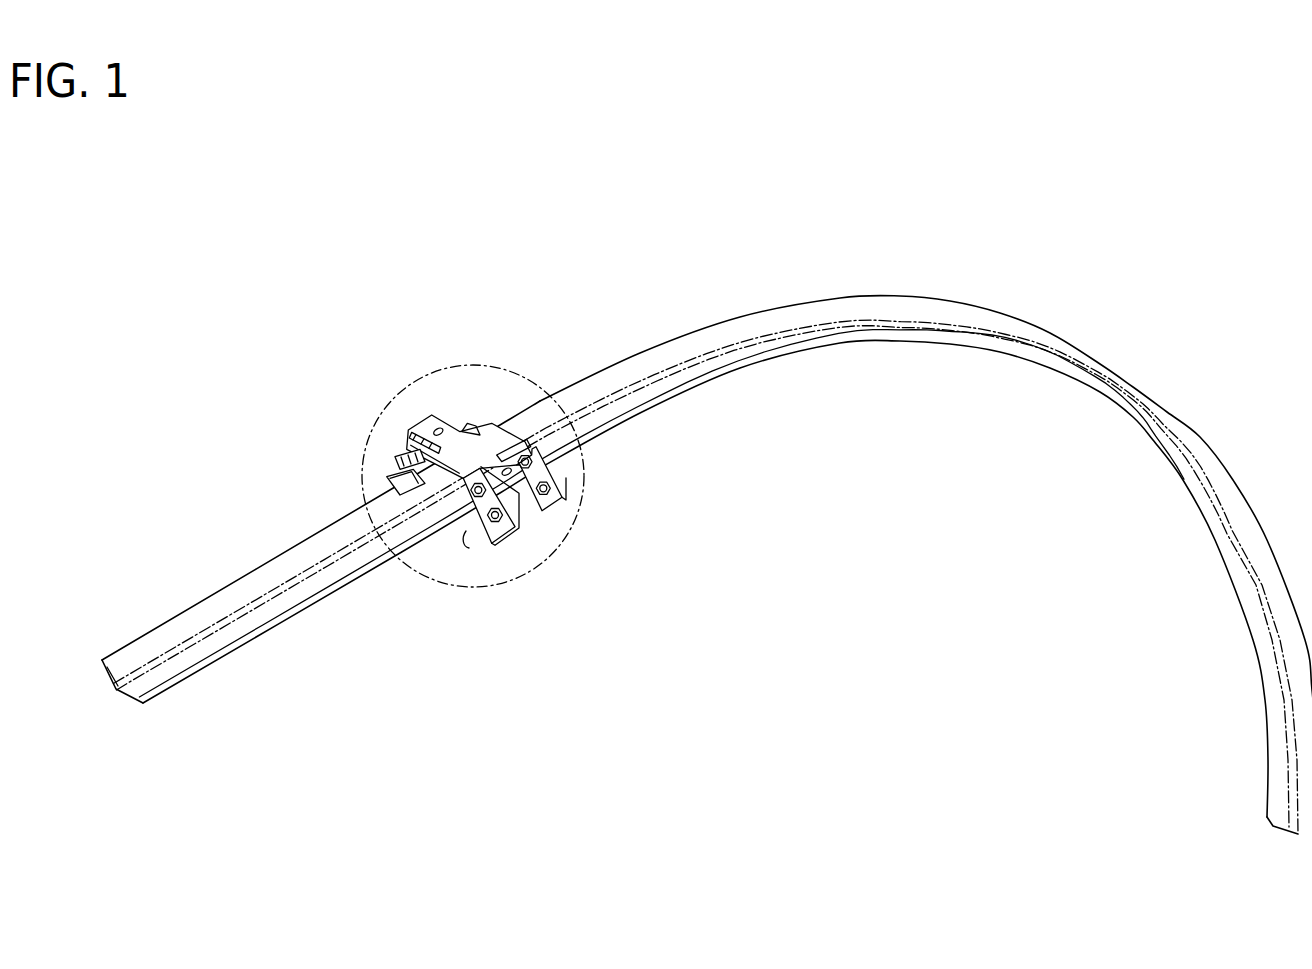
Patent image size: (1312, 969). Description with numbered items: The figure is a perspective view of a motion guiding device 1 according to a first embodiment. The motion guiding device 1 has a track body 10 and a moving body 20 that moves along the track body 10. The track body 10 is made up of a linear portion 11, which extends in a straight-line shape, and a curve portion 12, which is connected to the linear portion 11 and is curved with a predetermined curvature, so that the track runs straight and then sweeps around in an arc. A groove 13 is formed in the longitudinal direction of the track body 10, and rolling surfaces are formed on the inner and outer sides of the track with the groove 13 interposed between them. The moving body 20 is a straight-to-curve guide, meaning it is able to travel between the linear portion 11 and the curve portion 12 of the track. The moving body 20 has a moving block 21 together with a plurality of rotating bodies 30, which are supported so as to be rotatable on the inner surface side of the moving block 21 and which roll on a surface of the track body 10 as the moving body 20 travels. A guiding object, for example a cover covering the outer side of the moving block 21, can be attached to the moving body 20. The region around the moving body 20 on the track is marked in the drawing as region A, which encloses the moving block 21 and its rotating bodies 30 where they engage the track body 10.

The motion guiding device 1 is at (251, 380).
The track body 10 is at (283, 553).
The linear portion 11 is at (323, 512).
The curve portion 12 is at (815, 288).
The groove 13 is at (327, 578).
The moving body 20 is at (413, 404).
The moving block 21 is at (405, 430).
The rotating bodies 30 is at (408, 490).
The detail region A is at (475, 365).